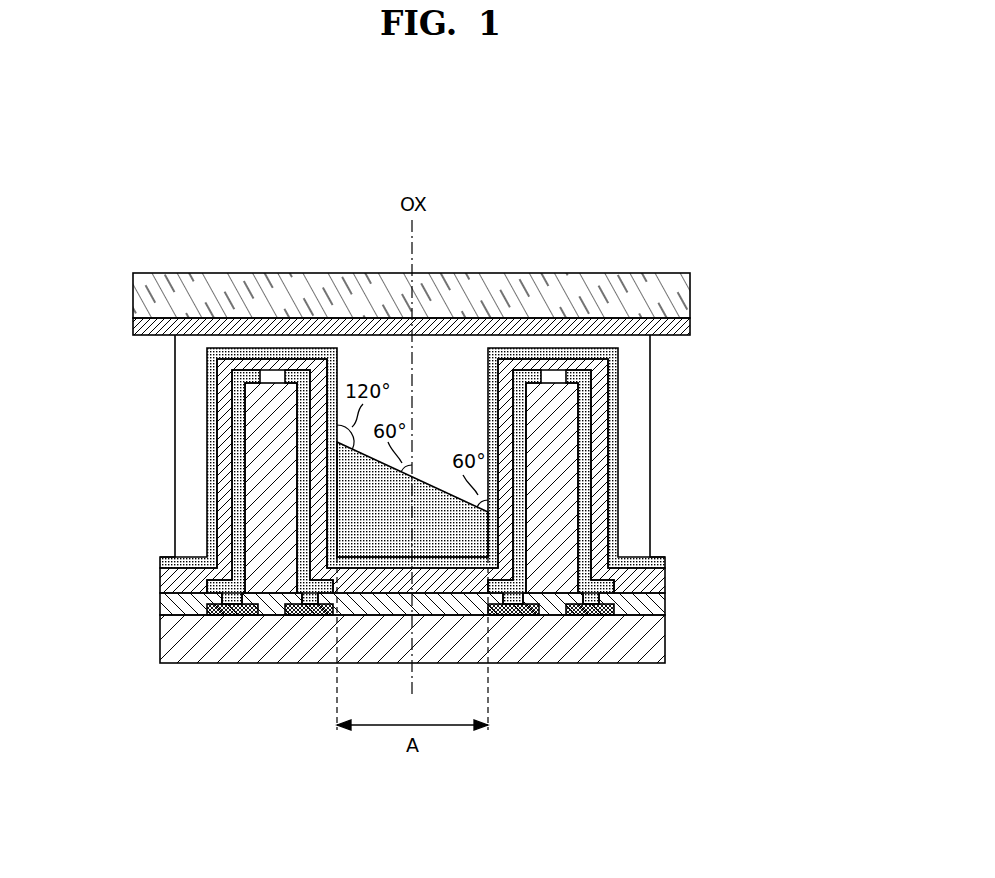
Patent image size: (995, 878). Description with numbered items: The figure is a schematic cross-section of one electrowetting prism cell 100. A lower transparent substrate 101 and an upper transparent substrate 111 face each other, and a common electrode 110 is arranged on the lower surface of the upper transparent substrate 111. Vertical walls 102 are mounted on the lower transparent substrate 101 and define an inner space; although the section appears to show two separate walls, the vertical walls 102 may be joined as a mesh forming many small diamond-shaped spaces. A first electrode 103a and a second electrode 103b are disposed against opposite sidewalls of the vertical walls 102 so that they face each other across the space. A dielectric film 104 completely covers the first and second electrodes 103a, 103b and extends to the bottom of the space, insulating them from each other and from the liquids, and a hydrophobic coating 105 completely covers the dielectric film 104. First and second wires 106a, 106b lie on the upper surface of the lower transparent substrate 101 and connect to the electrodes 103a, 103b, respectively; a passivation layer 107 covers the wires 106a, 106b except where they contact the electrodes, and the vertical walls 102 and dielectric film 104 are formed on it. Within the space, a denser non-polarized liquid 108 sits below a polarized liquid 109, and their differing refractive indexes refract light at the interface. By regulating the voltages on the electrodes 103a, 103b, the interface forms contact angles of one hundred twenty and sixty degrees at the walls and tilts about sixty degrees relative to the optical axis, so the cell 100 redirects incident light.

The electrowetting prism cell 100 is at (153, 241).
The lower transparent substrate 101 is at (657, 640).
The vertical walls 102 is at (246, 505).
The first electrode 103a is at (303, 377).
The second electrode 103b is at (245, 377).
The dielectric film 104 is at (222, 384).
The hydrophobic coating 105 is at (210, 406).
The first wire 106a is at (302, 617).
The second wire 106b is at (228, 617).
The passivation layer 107 is at (657, 608).
The non-polarized liquid 108 is at (442, 540).
The polarized liquid 109 is at (445, 368).
The common electrode 110 is at (682, 328).
The upper transparent substrate 111 is at (682, 297).